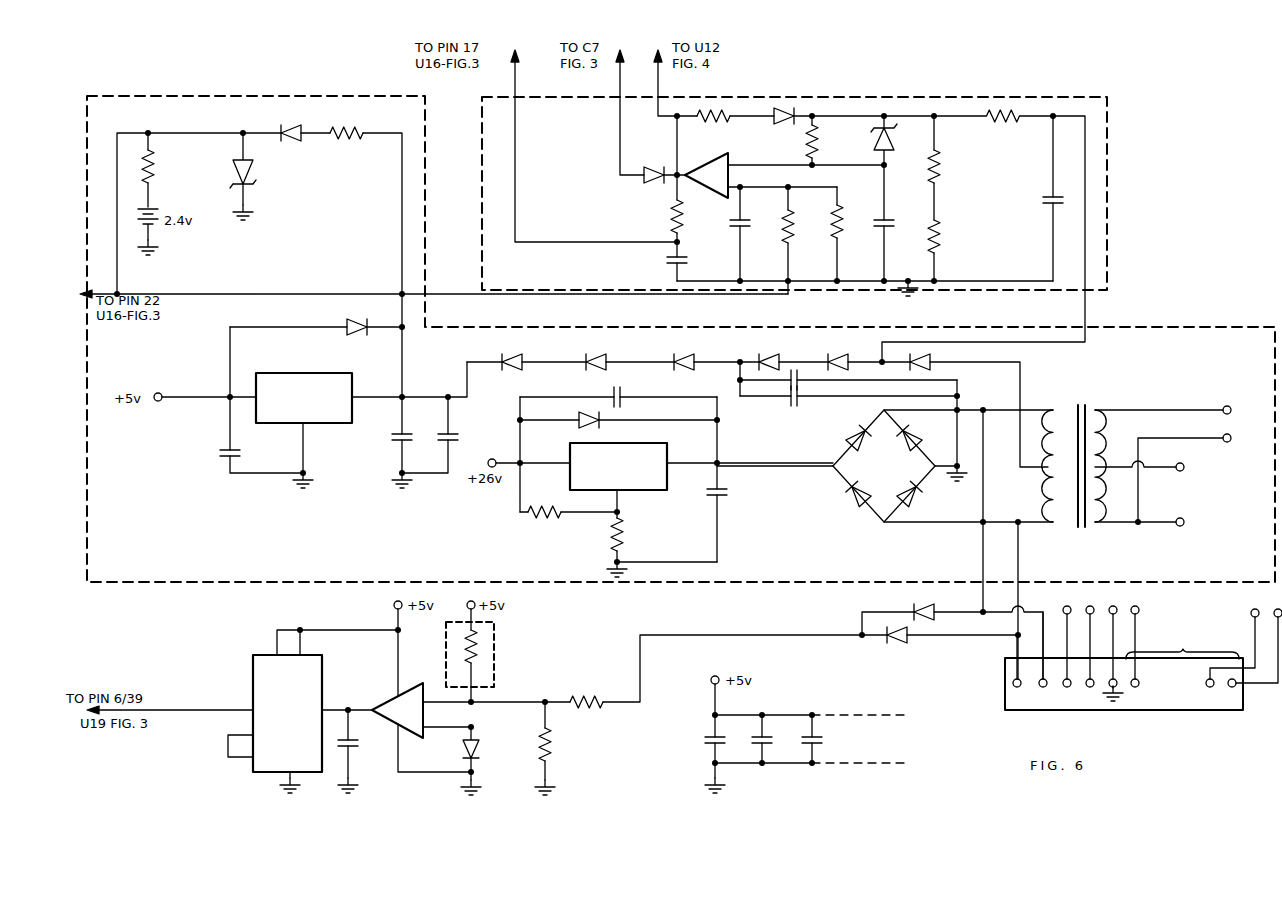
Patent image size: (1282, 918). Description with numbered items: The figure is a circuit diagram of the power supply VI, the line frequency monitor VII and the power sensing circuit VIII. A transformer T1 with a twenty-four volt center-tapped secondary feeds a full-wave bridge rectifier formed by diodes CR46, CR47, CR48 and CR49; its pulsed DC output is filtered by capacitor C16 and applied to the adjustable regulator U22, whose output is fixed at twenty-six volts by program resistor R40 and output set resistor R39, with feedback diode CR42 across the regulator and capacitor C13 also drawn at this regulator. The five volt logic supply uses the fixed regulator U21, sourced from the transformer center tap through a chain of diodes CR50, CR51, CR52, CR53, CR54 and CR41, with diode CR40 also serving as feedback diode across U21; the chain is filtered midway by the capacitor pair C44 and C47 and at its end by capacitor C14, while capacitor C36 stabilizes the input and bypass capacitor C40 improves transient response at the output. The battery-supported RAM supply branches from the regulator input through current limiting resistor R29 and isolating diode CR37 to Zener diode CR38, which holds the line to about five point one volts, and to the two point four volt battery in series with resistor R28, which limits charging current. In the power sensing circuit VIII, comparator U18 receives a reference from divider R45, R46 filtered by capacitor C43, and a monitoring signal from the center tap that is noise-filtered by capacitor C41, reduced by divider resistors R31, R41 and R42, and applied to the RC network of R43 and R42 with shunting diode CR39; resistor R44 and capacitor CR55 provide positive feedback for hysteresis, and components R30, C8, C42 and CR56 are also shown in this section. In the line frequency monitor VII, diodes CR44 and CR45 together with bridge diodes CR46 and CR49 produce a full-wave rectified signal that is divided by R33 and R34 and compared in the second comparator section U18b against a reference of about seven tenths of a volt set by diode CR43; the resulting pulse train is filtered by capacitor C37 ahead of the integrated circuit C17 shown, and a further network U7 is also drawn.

The power supply VI is at (1175, 319).
The line frequency monitor VII is at (1172, 611).
The power sensing circuit VIII is at (1120, 148).
The current limiting resistor R28 is at (164, 170).
The Zener diode CR38 is at (261, 176).
The isolating diode CR37 is at (294, 123).
The current limiting resistor R29 is at (346, 125).
The diode CR40 is at (316, 320).
The bypass capacitor C40 is at (209, 455).
The fixed positive 5 volt regulator U21 is at (304, 398).
The capacitor C14 is at (384, 442).
The capacitor C36 is at (443, 435).
The diode CR56 is at (647, 185).
The resistor R44 is at (735, 125).
The capacitor CR55 is at (786, 125).
The resistor R43 is at (827, 142).
The shunting diode CR39 is at (862, 142).
The capacitor C42 is at (894, 223).
The resistor R41 is at (948, 168).
The resistor R42 is at (948, 250).
The resistor R31 is at (1003, 125).
The capacitor C41 is at (1038, 198).
The resistor R30 is at (691, 208).
The capacitor C8 is at (663, 261).
The voltage comparator U18 is at (709, 175).
The voltage comparator U18b is at (403, 712).
The capacitor C43 is at (750, 234).
The resistor R45 is at (801, 240).
The resistor R46 is at (851, 234).
The diode CR41 is at (510, 353).
The diode CR54 is at (593, 353).
The diode CR53 is at (680, 353).
The diode CR52 is at (764, 353).
The diode CR51 is at (834, 353).
The diode CR50 is at (940, 358).
The capacitor C44 is at (848, 379).
The capacitor C47 is at (848, 400).
The bridge rectifier diode CR47 is at (846, 433).
The bridge rectifier diode CR46 is at (919, 437).
The bridge rectifier diode CR48 is at (838, 495).
The bridge rectifier diode CR49 is at (922, 498).
The power transformer T1 is at (1136, 467).
The capacitor C13 is at (618, 394).
The feedback diode CR42 is at (618, 417).
The adjustable positive voltage regulator U22 is at (618, 466).
The program resistor R40 is at (568, 520).
The output set resistor R39 is at (629, 547).
The capacitor C16 is at (685, 523).
The counter/timer IC C17 is at (288, 709).
The high frequency filter C37 is at (361, 751).
The resistor network U7 is at (470, 652).
The diode CR43 is at (489, 761).
The resistor R33 is at (703, 671).
The resistor R34 is at (557, 748).
The diode CR45 is at (940, 640).
The diode CR44 is at (952, 637).